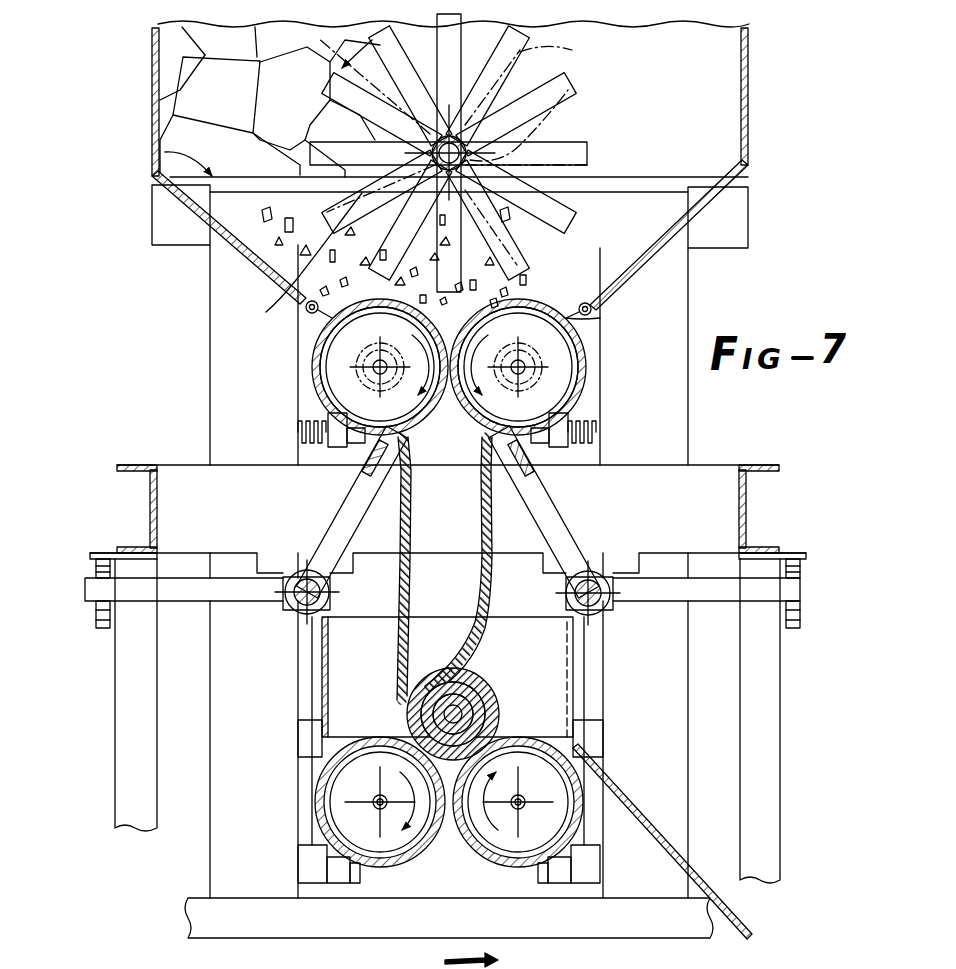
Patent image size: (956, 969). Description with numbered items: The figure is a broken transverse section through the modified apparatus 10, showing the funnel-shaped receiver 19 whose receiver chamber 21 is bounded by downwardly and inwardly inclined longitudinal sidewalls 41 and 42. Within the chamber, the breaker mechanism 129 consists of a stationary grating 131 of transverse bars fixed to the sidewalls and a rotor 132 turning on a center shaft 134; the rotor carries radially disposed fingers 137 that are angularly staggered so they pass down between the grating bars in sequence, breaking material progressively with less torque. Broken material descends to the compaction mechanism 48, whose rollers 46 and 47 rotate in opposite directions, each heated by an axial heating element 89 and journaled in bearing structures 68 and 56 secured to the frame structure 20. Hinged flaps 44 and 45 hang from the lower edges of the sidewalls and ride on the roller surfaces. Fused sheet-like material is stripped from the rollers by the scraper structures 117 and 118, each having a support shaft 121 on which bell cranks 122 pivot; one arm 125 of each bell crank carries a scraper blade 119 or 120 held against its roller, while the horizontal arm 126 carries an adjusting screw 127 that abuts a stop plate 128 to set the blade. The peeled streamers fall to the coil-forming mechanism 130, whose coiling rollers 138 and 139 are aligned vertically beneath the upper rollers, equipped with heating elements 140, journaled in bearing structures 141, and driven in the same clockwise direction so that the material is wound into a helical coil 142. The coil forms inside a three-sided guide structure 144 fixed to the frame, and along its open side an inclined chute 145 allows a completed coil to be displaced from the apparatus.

The receiver 19 is at (152, 34).
The receiver chamber 21 is at (167, 64).
The apparatus 10 is at (150, 105).
The breaker mechanism 129 is at (165, 152).
The fingers 137 is at (296, 300).
The center shaft 134 is at (528, 128).
The stationary grating 131 is at (664, 180).
The rotor 132 is at (522, 232).
The longitudinal sidewall 42 is at (237, 248).
The longitudinal sidewall 41 is at (643, 274).
The hinged flap 45 is at (304, 323).
The hinged flap 44 is at (587, 317).
The compaction mechanism 48 is at (312, 372).
The roller 47 is at (322, 383).
The roller 46 is at (582, 386).
The heating element 89 is at (378, 362).
The bearing structure 56 is at (298, 430).
The bearing structure 68 is at (600, 433).
The scraper blade 120 is at (412, 443).
The scraper blade 119 is at (479, 500).
The arm 125 is at (353, 502).
The scraper structure 118 is at (328, 516).
The scraper structure 117 is at (570, 518).
The stop plate 128 is at (102, 555).
The adjusting screw 127 is at (96, 628).
The arm 126 is at (186, 590).
The support shaft 121 is at (292, 606).
The bell crank 122 is at (306, 615).
The coil 142 is at (480, 683).
The guide structure 144 is at (560, 710).
The frame structure 20 is at (115, 754).
The coil-forming mechanism 130 is at (315, 814).
The coiling roller 138 is at (486, 860).
The heating element 140 is at (378, 798).
The chute 145 is at (645, 828).
The bearing structure 141 is at (325, 883).
The coiling roller 139 is at (378, 883).